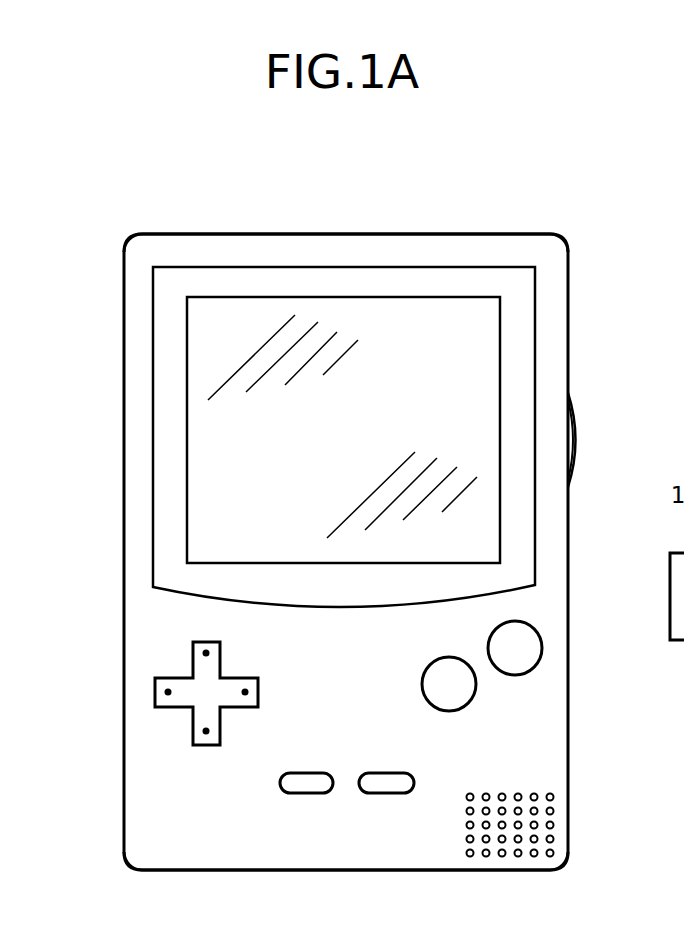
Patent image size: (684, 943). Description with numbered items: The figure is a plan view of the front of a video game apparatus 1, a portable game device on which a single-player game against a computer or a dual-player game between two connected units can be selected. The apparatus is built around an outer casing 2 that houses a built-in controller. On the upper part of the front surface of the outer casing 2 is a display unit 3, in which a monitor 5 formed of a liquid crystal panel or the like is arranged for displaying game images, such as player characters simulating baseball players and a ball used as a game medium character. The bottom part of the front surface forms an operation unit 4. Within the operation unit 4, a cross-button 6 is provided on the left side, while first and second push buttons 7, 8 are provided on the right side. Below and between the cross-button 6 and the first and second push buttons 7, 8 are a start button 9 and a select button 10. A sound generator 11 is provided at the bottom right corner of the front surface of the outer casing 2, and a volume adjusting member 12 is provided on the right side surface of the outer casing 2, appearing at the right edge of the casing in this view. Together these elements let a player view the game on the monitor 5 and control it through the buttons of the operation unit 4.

The video game apparatus 1 is at (484, 218).
The outer casing 2 is at (548, 313).
The display unit 3 is at (100, 391).
The operation unit 4 is at (100, 768).
The monitor 5 is at (478, 407).
The cross-button 6 is at (190, 690).
The first push button 7 is at (530, 637).
The second push button 8 is at (463, 685).
The start button 9 is at (306, 787).
The select button 10 is at (387, 787).
The sound generator 11 is at (554, 797).
The volume adjusting member 12 is at (577, 440).